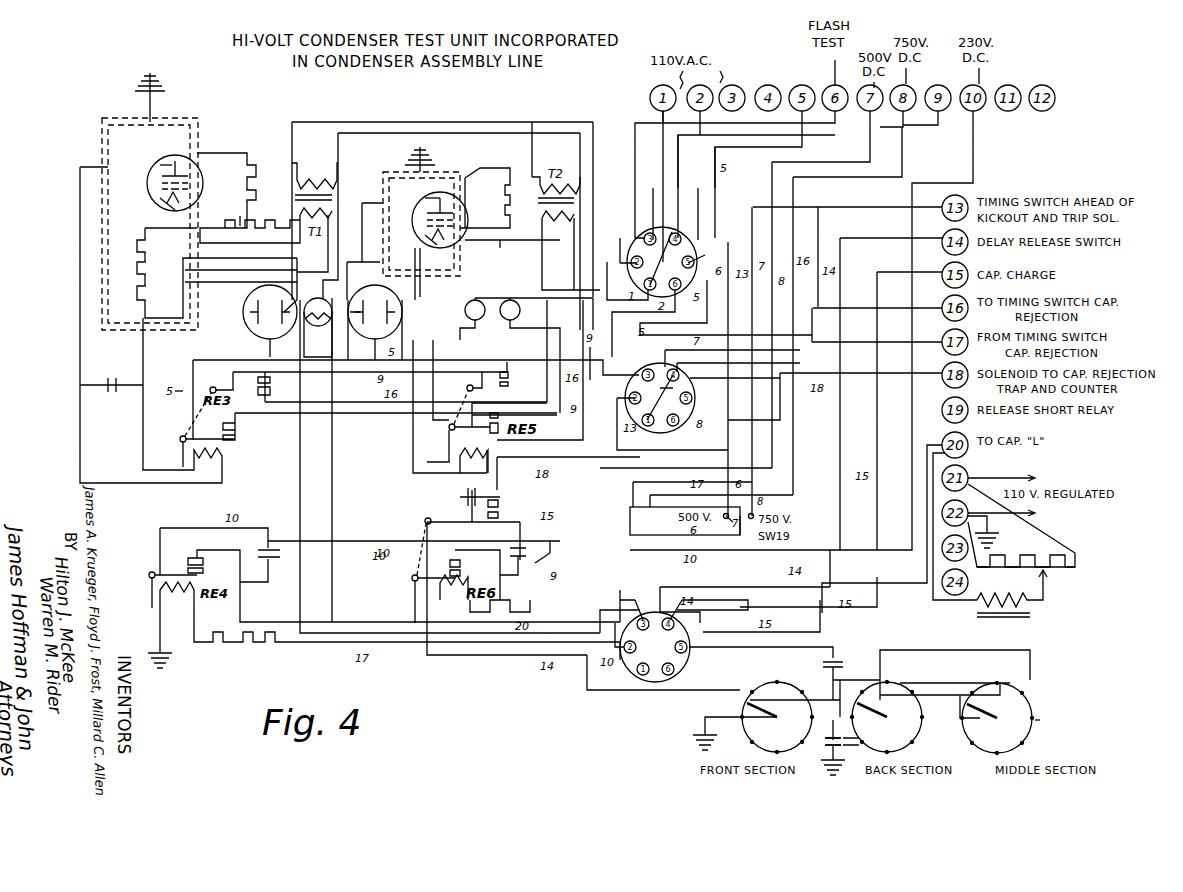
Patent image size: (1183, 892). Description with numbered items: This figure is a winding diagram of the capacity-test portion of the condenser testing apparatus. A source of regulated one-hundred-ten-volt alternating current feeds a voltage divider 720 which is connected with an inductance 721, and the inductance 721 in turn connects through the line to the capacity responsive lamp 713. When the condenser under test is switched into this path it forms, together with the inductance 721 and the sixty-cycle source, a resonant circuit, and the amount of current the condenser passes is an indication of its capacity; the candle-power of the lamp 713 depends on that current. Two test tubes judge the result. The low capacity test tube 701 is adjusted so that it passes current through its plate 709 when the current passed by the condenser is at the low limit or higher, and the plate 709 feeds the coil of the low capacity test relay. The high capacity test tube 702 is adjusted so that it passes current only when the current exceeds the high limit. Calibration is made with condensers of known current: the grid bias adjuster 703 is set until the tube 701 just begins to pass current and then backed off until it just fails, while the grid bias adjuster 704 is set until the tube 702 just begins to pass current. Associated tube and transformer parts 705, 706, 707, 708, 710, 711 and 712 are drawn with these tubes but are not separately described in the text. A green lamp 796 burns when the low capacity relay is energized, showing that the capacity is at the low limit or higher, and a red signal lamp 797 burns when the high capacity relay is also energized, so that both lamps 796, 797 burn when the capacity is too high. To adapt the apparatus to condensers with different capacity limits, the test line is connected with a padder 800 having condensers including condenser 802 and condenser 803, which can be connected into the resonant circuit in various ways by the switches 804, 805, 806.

The low capacity test tube 701 is at (198, 178).
The high capacity test tube 702 is at (460, 215).
The grid bias adjuster 703 is at (240, 216).
The grid bias adjuster 704 is at (501, 237).
The cathode 705 is at (170, 206).
The cathode 706 is at (433, 243).
The transformer T1 707 is at (314, 167).
The transformer T2 708 is at (555, 170).
The plate 709 is at (172, 164).
The plate 710 is at (433, 197).
The rectifier tube 711 is at (268, 335).
The rectifier tube 712 is at (373, 337).
The capacity responsive lamp 713 is at (318, 327).
The green lamp 796 is at (465, 304).
The red signal lamp 797 is at (520, 310).
The voltage divider 720 is at (1029, 570).
The inductance 721 is at (1035, 607).
The padder 800 is at (1068, 716).
The condenser 802 is at (819, 752).
The condenser 803 is at (855, 752).
The switch 804 is at (757, 708).
The switch 805 is at (887, 717).
The switch 806 is at (997, 718).